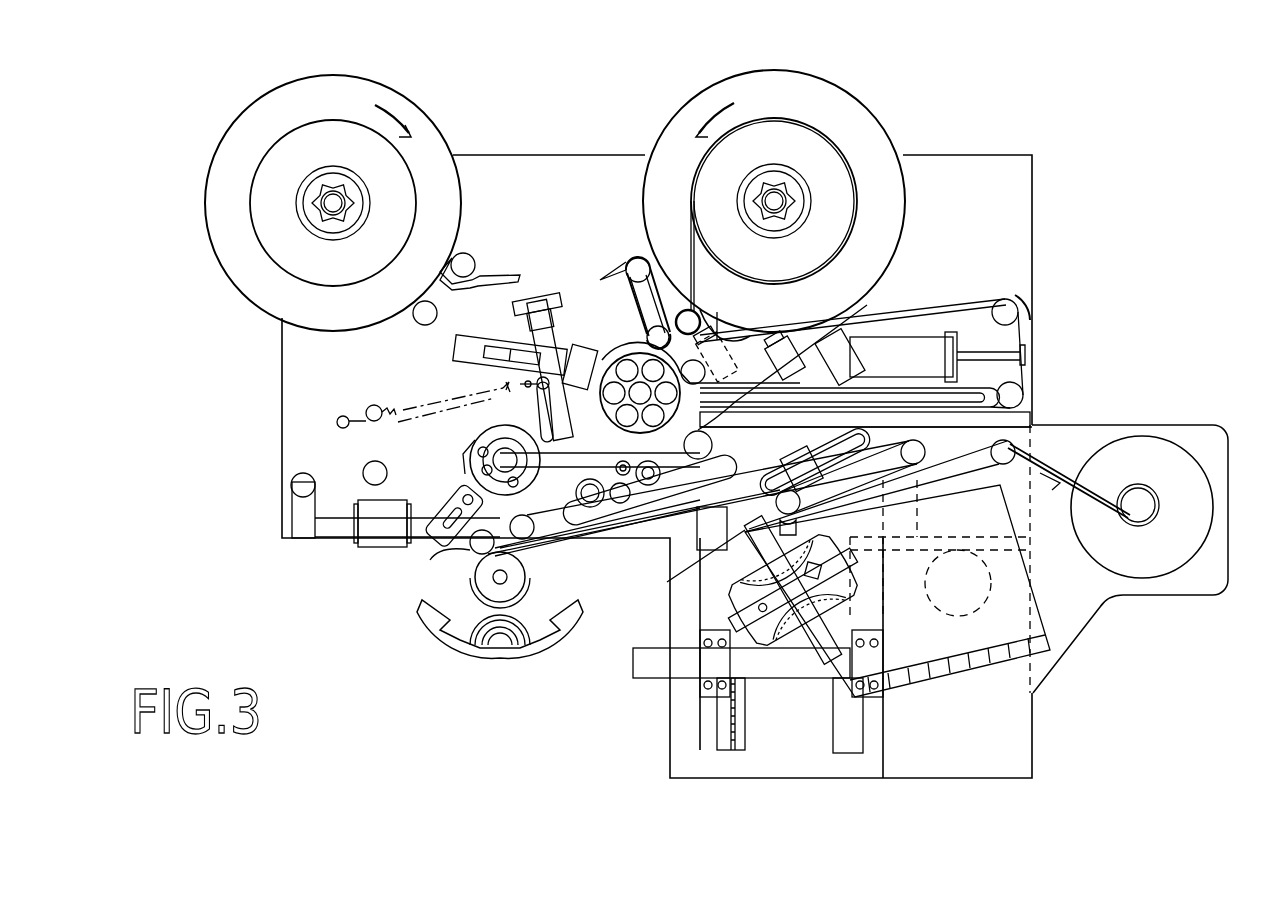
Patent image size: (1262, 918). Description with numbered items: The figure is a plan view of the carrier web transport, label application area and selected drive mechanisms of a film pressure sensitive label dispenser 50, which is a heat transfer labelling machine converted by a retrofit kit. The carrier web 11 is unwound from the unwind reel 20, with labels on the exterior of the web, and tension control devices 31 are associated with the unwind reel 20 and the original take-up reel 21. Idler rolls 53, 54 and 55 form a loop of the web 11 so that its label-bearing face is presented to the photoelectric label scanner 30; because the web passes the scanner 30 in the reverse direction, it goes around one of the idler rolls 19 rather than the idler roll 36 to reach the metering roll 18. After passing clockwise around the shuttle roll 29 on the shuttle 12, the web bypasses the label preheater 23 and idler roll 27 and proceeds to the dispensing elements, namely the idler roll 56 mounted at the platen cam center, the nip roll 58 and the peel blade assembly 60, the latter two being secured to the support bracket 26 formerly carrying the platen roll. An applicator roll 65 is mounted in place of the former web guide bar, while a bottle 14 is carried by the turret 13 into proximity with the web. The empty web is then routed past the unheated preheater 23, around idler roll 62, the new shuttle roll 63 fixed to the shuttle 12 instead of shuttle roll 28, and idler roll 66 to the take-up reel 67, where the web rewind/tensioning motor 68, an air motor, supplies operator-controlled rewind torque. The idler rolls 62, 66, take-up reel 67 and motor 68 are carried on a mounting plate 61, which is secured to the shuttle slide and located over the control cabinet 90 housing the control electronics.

The carrier web 11 is at (950, 300).
The shuttle 12 is at (335, 527).
The turret 13 is at (440, 632).
The bottle 14 is at (528, 592).
The metering roll 18 is at (630, 372).
The idler rolls 19 is at (420, 325).
The unwind reel 20 is at (762, 90).
The take-up reel 21 is at (318, 90).
The label preheater 23 is at (645, 520).
The support bracket 26 is at (556, 500).
The idler roll 27 is at (660, 475).
The shuttle roll 28 is at (282, 500).
The shuttle roll 29 is at (732, 442).
The label scanner 30 is at (850, 340).
The tension control devices 31 is at (465, 264).
The idler roll 36 is at (750, 345).
The pressure sensitive label dispenser 50 is at (534, 793).
The idler roll 53 is at (652, 328).
The idler roll 54 is at (1020, 315).
The idler roll 55 is at (1025, 400).
The idler roll 56 is at (470, 447).
The nip roll 58 is at (500, 512).
The peel blade assembly 60 is at (572, 528).
The mounting plate 61 is at (1185, 580).
The idler roll 62 is at (925, 462).
The shuttle roll 63 is at (689, 569).
The applicator roll 65 is at (445, 553).
The idler roll 66 is at (995, 460).
The take-up reel 67 is at (1132, 510).
The web rewind/tensioning motor 68 is at (1120, 438).
The control cabinet 90 is at (1000, 690).